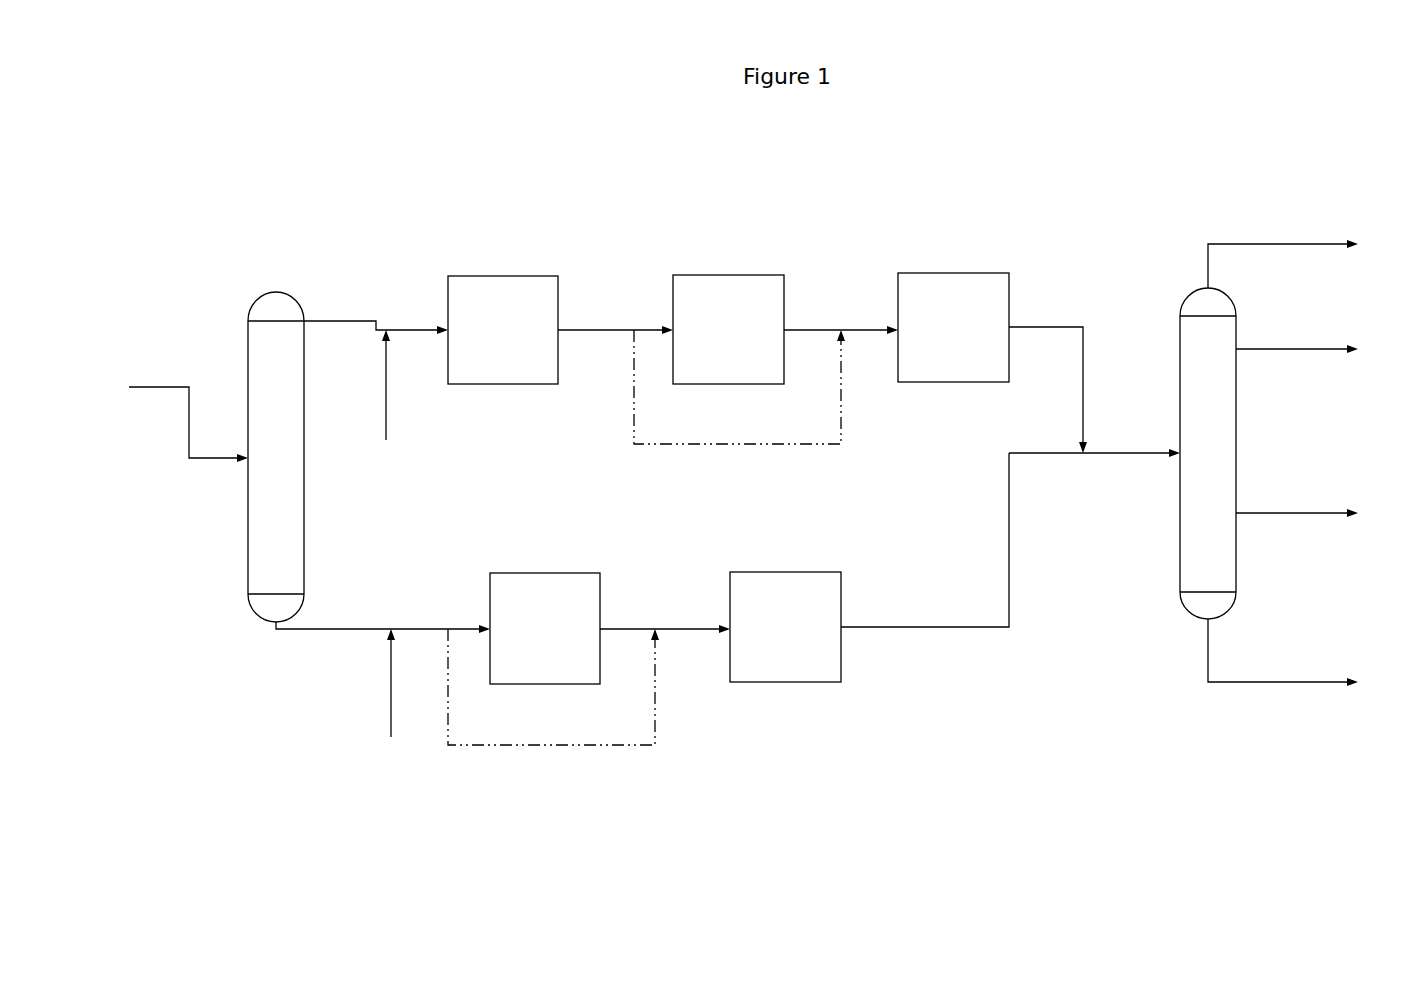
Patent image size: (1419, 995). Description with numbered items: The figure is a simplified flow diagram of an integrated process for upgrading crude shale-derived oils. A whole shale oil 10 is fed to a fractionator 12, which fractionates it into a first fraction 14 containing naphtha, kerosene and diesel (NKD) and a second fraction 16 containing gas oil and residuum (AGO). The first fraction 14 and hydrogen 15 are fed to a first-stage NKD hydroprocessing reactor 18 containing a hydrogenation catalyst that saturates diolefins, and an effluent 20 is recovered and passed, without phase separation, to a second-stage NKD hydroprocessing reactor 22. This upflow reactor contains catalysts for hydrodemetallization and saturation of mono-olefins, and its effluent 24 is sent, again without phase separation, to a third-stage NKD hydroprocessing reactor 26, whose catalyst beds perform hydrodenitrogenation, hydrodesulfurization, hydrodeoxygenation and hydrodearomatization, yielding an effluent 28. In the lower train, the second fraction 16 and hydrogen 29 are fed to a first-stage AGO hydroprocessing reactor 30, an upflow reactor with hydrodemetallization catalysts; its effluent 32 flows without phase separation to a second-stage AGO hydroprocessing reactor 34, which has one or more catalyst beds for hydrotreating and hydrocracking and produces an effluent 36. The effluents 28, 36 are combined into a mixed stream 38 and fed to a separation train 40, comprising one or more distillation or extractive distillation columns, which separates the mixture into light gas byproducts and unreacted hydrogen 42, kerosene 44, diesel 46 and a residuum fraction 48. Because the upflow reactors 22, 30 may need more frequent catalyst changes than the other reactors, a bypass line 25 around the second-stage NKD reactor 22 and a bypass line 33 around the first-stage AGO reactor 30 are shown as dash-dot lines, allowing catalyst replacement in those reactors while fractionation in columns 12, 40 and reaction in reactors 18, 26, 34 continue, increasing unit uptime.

The whole shale oil 10 is at (158, 388).
The fractionator 12 is at (268, 292).
The first fraction 14 is at (340, 320).
The hydrogen 15 is at (385, 416).
The second fraction 16 is at (352, 626).
The first-stage NKD hydroprocessing reactor 18 is at (503, 330).
The effluent 20 is at (617, 329).
The second-stage NKD hydroprocessing reactor 22 is at (728, 329).
The effluent 24 is at (831, 330).
The bypass line 25 is at (736, 444).
The third-stage NKD hydroprocessing reactor 26 is at (953, 327).
The effluent 28 is at (1050, 327).
The hydrogen 29 is at (388, 708).
The first-stage AGO hydroprocessing reactor 30 is at (545, 628).
The effluent 32 is at (647, 626).
The bypass line 33 is at (547, 743).
The second-stage AGO hydroprocessing reactor 34 is at (785, 627).
The effluent 36 is at (920, 626).
The mixed stream 38 is at (1129, 451).
The separation train 40 is at (1191, 291).
The light gas byproducts and unreacted hydrogen 42 is at (1276, 243).
The kerosene 44 is at (1297, 348).
The diesel 46 is at (1302, 511).
The residuum fraction 48 is at (1310, 676).